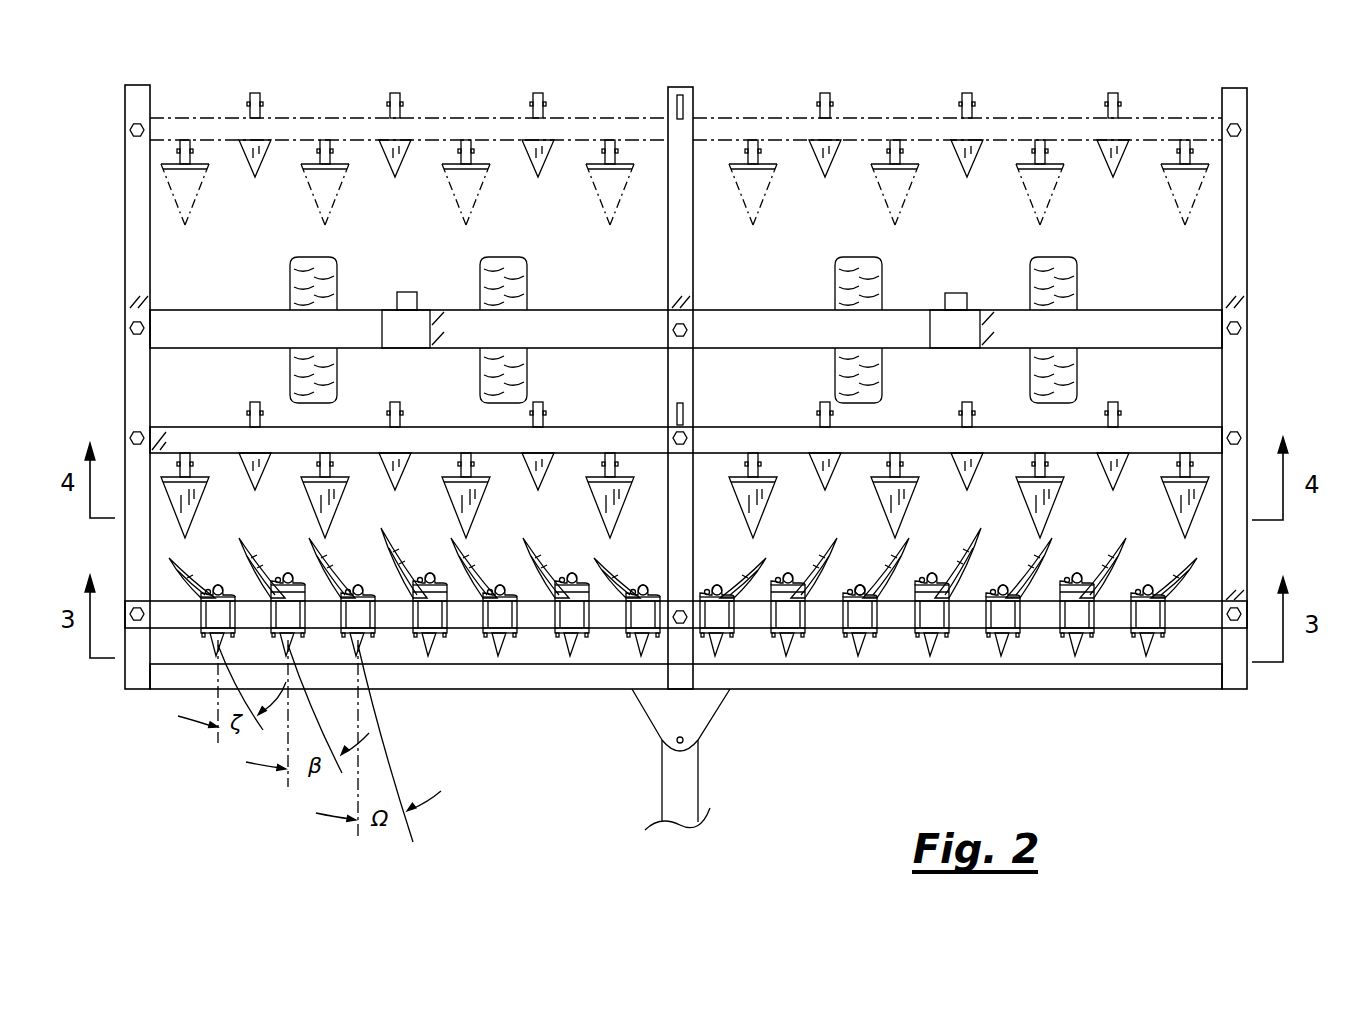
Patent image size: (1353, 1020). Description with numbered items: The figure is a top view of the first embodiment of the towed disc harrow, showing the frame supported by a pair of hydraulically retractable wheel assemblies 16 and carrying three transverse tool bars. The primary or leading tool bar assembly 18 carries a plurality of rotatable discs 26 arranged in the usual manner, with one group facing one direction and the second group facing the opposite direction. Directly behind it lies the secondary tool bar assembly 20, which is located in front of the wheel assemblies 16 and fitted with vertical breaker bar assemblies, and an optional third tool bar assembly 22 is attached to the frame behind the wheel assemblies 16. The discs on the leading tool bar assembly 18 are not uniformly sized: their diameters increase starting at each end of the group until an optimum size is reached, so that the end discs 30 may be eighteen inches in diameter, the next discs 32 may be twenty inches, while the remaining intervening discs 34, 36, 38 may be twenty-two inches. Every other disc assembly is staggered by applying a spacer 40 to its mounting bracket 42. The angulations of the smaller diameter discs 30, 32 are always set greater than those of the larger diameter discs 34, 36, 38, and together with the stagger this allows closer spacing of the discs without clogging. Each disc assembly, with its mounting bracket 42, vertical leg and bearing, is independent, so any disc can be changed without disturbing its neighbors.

The hydraulically retractable wheel assembly 16 is at (1082, 288).
The leading tool bar assembly 18 is at (1208, 580).
The secondary tool bar assembly 20 is at (197, 418).
The third tool bar assembly 22 is at (340, 108).
The rotatable disc 26 is at (497, 640).
The disc 30 is at (722, 645).
The disc 32 is at (795, 645).
The disc 34 is at (868, 652).
The disc 36 is at (940, 652).
The disc 38 is at (1013, 652).
The spacer 40 is at (933, 597).
The mounting bracket 42 is at (868, 586).